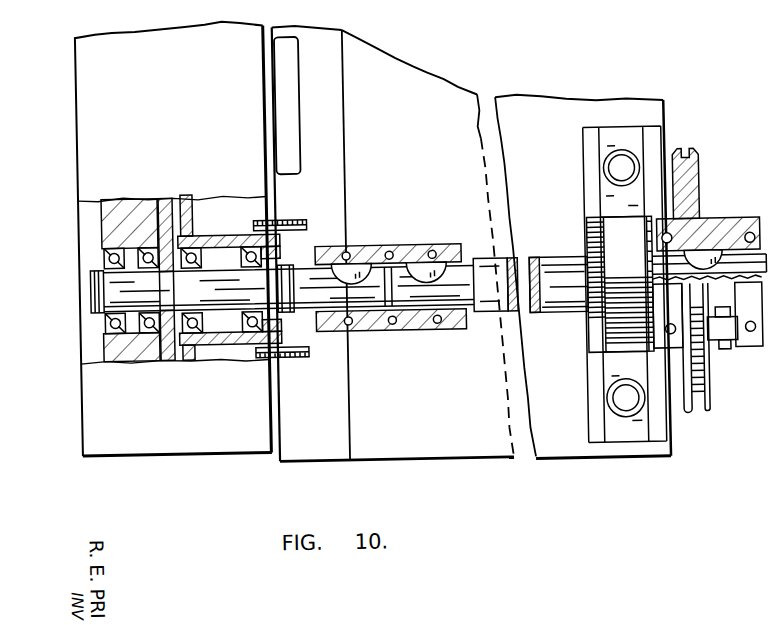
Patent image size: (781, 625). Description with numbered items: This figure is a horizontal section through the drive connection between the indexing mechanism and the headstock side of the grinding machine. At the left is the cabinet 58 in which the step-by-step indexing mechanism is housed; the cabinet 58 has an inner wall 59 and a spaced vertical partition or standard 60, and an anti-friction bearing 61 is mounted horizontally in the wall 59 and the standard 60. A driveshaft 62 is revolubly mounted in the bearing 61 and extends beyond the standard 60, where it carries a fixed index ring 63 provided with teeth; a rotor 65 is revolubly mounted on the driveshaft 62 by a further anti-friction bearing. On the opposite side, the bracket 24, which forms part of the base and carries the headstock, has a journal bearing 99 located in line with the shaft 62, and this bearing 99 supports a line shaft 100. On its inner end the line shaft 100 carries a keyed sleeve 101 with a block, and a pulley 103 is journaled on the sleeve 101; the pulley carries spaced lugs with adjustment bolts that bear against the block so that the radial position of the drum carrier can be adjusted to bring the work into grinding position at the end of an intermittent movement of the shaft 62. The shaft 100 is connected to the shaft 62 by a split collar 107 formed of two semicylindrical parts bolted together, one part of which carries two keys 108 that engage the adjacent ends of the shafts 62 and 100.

The bracket 24 is at (569, 113).
The cabinet 58 is at (197, 443).
The inner wall 59 is at (269, 362).
The vertical partition or standard 60 is at (205, 203).
The anti-friction bearing 61 is at (296, 218).
The driveshaft 62 is at (113, 277).
The index ring 63 is at (170, 196).
The rotor 65 is at (122, 202).
The journal bearing 99 is at (629, 206).
The line shaft 100 is at (548, 261).
The keyed sleeve 101 is at (718, 239).
The pulley 103 is at (699, 199).
The split collar 107 is at (443, 251).
The keys 108 is at (357, 276).